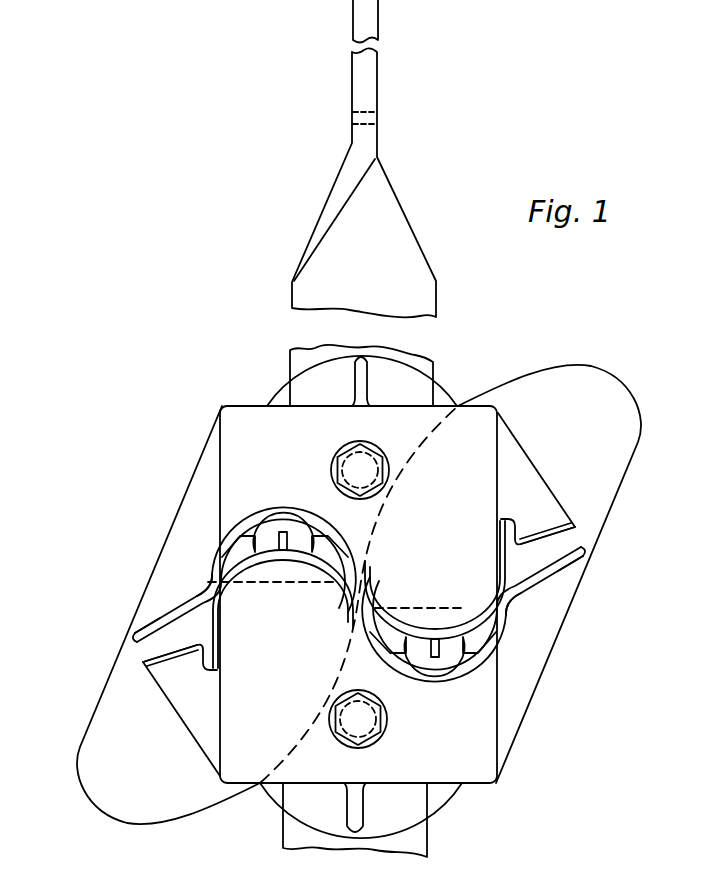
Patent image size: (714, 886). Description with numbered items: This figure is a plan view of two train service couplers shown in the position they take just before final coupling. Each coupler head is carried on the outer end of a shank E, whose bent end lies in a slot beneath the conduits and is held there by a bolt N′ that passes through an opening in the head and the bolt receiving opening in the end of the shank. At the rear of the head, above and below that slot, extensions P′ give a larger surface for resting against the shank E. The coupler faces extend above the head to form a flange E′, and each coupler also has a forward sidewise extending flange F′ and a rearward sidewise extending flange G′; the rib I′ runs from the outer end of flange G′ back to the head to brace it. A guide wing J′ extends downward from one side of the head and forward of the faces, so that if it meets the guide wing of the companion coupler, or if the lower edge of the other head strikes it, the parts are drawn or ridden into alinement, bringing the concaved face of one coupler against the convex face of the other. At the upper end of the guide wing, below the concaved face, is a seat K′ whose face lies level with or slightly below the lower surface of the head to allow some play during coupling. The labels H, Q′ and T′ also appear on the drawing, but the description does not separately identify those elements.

The shank E is at (378, 97).
The extensions P′ is at (293, 385).
The forward sidewise extending flange F′ is at (430, 367).
The bolt N′ is at (377, 470).
The rib I′ is at (530, 497).
The guide wing J′ is at (613, 475).
The rearward sidewise extending flange G′ is at (567, 527).
The strap end H is at (545, 632).
The seat K′ is at (497, 615).
The clamp ring Q′ is at (320, 537).
The key T′ is at (282, 550).
The flange E′ is at (373, 582).